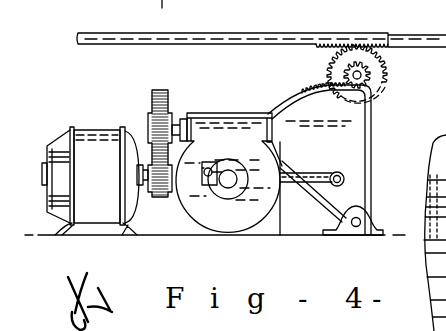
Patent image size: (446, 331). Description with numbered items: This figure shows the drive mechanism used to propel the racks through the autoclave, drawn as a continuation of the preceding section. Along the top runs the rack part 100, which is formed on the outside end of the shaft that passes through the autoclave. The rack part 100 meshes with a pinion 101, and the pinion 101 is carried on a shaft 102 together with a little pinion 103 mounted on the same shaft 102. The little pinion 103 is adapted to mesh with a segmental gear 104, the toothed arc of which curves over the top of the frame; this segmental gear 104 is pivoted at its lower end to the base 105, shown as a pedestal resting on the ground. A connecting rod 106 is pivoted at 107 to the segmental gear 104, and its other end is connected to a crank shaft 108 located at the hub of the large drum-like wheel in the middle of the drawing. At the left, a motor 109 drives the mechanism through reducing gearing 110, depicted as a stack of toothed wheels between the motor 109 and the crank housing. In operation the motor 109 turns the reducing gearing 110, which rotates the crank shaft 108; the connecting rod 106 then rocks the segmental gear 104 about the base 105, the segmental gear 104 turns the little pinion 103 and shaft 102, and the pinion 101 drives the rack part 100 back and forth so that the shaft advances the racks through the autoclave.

The rack part 100 is at (325, 37).
The pinion 101 is at (386, 64).
The shaft 102 is at (328, 70).
The little pinion 103 is at (366, 79).
The segmental gear 104 is at (371, 134).
The base 105 is at (351, 233).
The connecting rod 106 is at (308, 180).
The pivot 107 is at (344, 178).
The crank shaft 108 is at (205, 188).
The motor 109 is at (92, 218).
The reducing gearing 110 is at (165, 206).